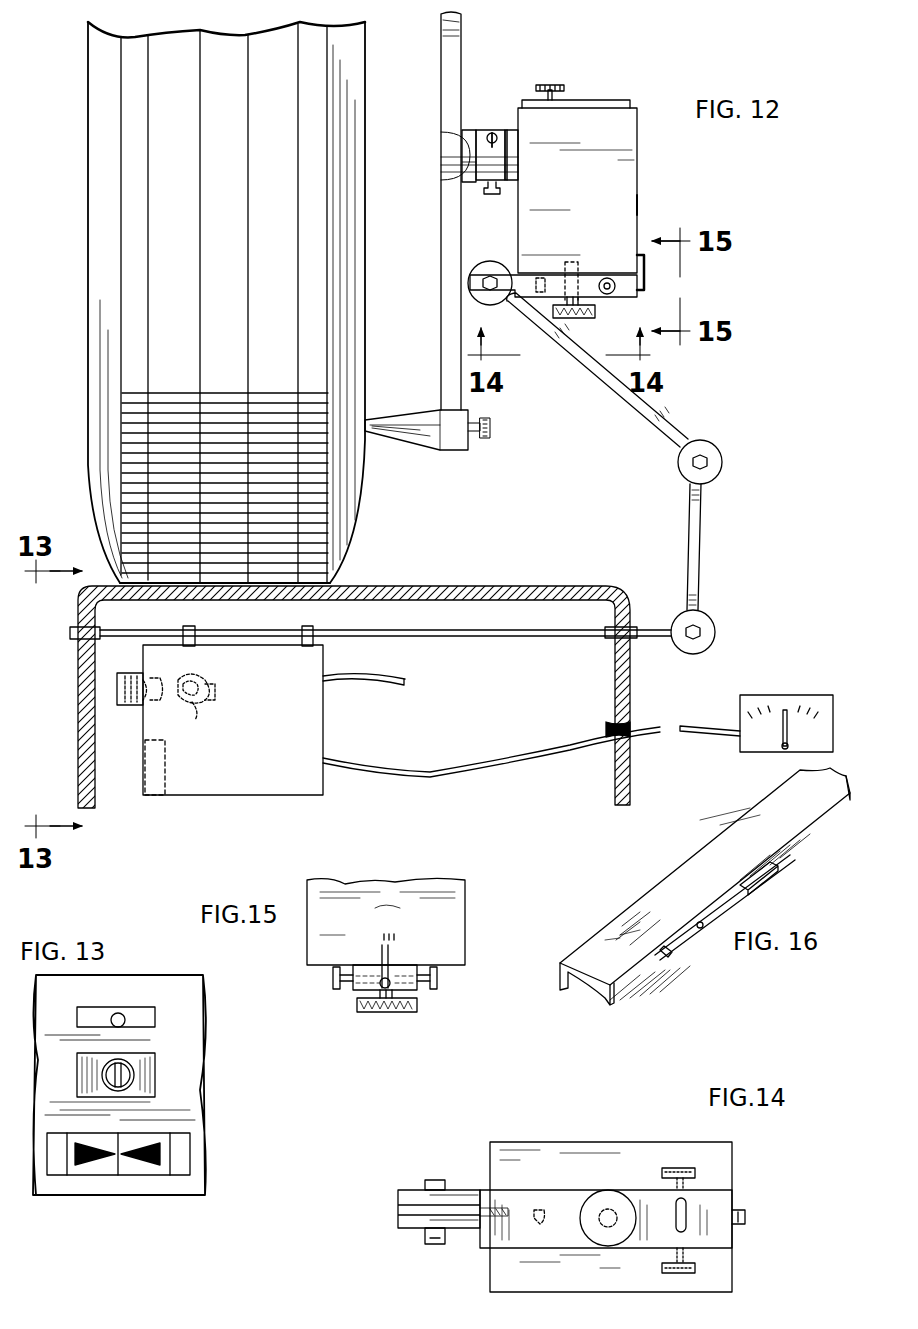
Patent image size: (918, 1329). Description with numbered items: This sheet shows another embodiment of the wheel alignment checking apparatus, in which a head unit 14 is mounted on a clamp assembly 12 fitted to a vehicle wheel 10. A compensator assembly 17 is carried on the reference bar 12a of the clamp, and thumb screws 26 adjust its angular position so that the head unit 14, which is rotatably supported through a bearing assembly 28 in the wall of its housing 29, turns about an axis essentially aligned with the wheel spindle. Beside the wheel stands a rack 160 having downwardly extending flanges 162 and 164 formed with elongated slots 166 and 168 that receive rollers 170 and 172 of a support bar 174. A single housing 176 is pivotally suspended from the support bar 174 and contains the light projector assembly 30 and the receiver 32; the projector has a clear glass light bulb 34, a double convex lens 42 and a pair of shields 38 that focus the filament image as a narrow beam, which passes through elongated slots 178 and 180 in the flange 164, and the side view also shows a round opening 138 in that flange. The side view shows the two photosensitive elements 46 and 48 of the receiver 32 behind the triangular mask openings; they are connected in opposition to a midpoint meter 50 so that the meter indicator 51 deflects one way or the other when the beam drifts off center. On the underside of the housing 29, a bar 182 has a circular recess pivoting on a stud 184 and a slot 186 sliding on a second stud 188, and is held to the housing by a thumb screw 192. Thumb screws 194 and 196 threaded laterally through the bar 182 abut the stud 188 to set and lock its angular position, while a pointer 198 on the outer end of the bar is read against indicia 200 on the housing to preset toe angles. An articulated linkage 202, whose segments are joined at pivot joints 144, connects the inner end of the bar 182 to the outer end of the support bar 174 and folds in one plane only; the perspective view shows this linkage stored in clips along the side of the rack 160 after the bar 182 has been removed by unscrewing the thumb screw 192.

In FIG. 12, the wheel 10 is at (86, 286).
In FIG. 12, the clamp assembly 12 is at (433, 447).
In FIG. 12, the reference bar 12a is at (441, 262).
In FIG. 12, the head unit 14 is at (640, 155).
In FIG. 12, the compensator assembly 17 is at (492, 128).
In FIG. 12, the thumb screws 26 is at (497, 193).
In FIG. 12, the bearing assembly 28 is at (507, 128).
In FIG. 12, the housing 29 is at (634, 204).
In FIG. 12, the pulley 144 is at (487, 263).
In FIG. 12, the bar 182 is at (588, 282).
In FIG. 15, the bar 182 is at (400, 974).
In FIG. 16, the bar 182 is at (770, 878).
In FIG. 14, the bar 182 is at (510, 1240).
In FIG. 12, the stud 184 is at (556, 246).
In FIG. 14, the stud 184 is at (554, 1178).
In FIG. 12, the thumb screw 192 is at (576, 319).
In FIG. 15, the thumb screw 192 is at (398, 1013).
In FIG. 14, the thumb screw 192 is at (612, 1168).
In FIG. 12, the articulated linkage 202 is at (680, 417).
In FIG. 16, the articulated linkage 202 is at (730, 910).
In FIG. 14, the articulated linkage 202 is at (477, 1198).
In FIG. 12, the rack 160 is at (428, 578).
In FIG. 16, the rack 160 is at (655, 882).
In FIG. 12, the flange 162 is at (632, 683).
In FIG. 12, the flange 164 is at (80, 651).
In FIG. 13, the flange 164 is at (180, 1060).
In FIG. 12, the elongated slot 166 is at (612, 630).
In FIG. 12, the elongated slot 168 is at (80, 630).
In FIG. 13, the elongated slot 168 is at (150, 1014).
In FIG. 12, the roller 170 is at (608, 642).
In FIG. 12, the roller 172 is at (96, 632).
In FIG. 13, the roller 172 is at (125, 1020).
In FIG. 12, the support bar 174 is at (426, 631).
In FIG. 12, the housing 176 is at (324, 716).
In FIG. 13, the housing 176 is at (145, 1077).
In FIG. 12, the elongated slot 178 is at (80, 709).
In FIG. 13, the elongated slot 178 is at (155, 1093).
In FIG. 12, the elongated slot 180 is at (80, 784).
In FIG. 13, the elongated slot 180 is at (185, 1140).
In FIG. 12, the receiver 32 is at (155, 788).
In FIG. 13, the receiver 32 is at (133, 1168).
In FIG. 12, the shields 38 is at (128, 673).
In FIG. 12, the double convex lens 42 is at (148, 678).
In FIG. 12, the light projector assembly 30 is at (198, 694).
In FIG. 12, the light bulb 34 is at (194, 710).
In FIG. 12, the midpoint meter 50 is at (770, 696).
In FIG. 12, the meter indicator 51 is at (776, 748).
In FIG. 13, the port 138 is at (126, 1073).
In FIG. 13, the photosensitive element 46 is at (145, 1168).
In FIG. 13, the photosensitive element 48 is at (87, 1168).
In FIG. 15, the indicia 200 is at (400, 890).
In FIG. 15, the thumb screw 194 is at (333, 980).
In FIG. 14, the thumb screw 194 is at (684, 1168).
In FIG. 15, the thumb screw 196 is at (438, 980).
In FIG. 14, the thumb screw 196 is at (688, 1274).
In FIG. 15, the pointer 198 is at (380, 984).
In FIG. 14, the pointer 198 is at (748, 1216).
In FIG. 14, the slot 186 is at (678, 1232).
In FIG. 14, the stud 188 is at (686, 1212).